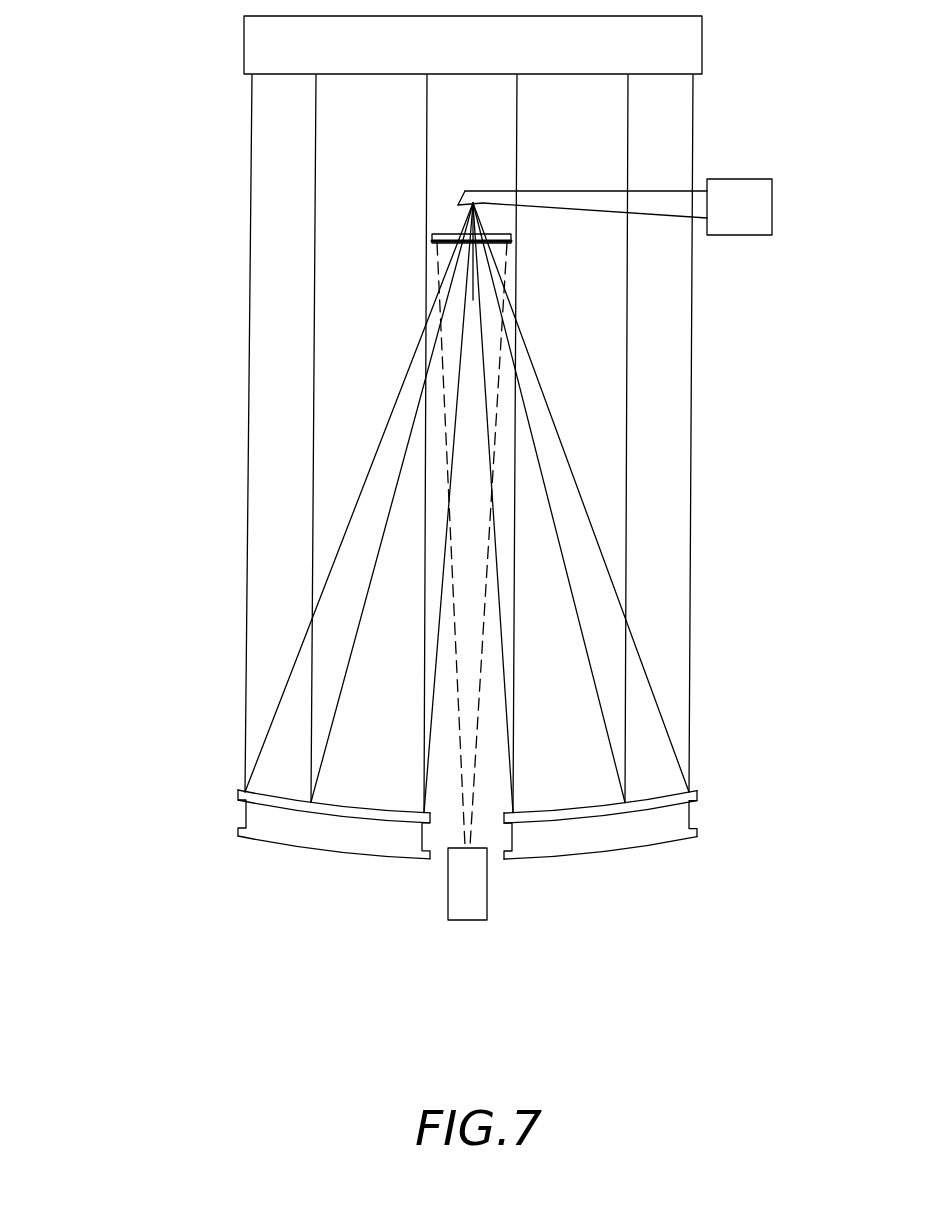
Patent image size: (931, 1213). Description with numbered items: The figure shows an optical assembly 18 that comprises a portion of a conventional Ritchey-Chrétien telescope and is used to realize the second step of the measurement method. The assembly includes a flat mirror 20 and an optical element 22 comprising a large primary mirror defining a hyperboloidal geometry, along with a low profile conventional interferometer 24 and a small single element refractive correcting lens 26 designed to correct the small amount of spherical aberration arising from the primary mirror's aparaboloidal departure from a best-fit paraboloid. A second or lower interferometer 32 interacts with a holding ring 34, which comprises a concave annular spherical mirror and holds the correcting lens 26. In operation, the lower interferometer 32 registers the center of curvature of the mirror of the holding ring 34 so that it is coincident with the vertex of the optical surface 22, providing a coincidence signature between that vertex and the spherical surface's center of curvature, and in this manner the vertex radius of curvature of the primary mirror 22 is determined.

The optical assembly 18 is at (684, 900).
The flat mirror 20 is at (473, 45).
The primary mirror 22 is at (467, 824).
The interferometer 24 is at (738, 179).
The correcting lens 26 is at (467, 234).
The second interferometer 32 is at (466, 883).
The holding ring 34 is at (511, 233).